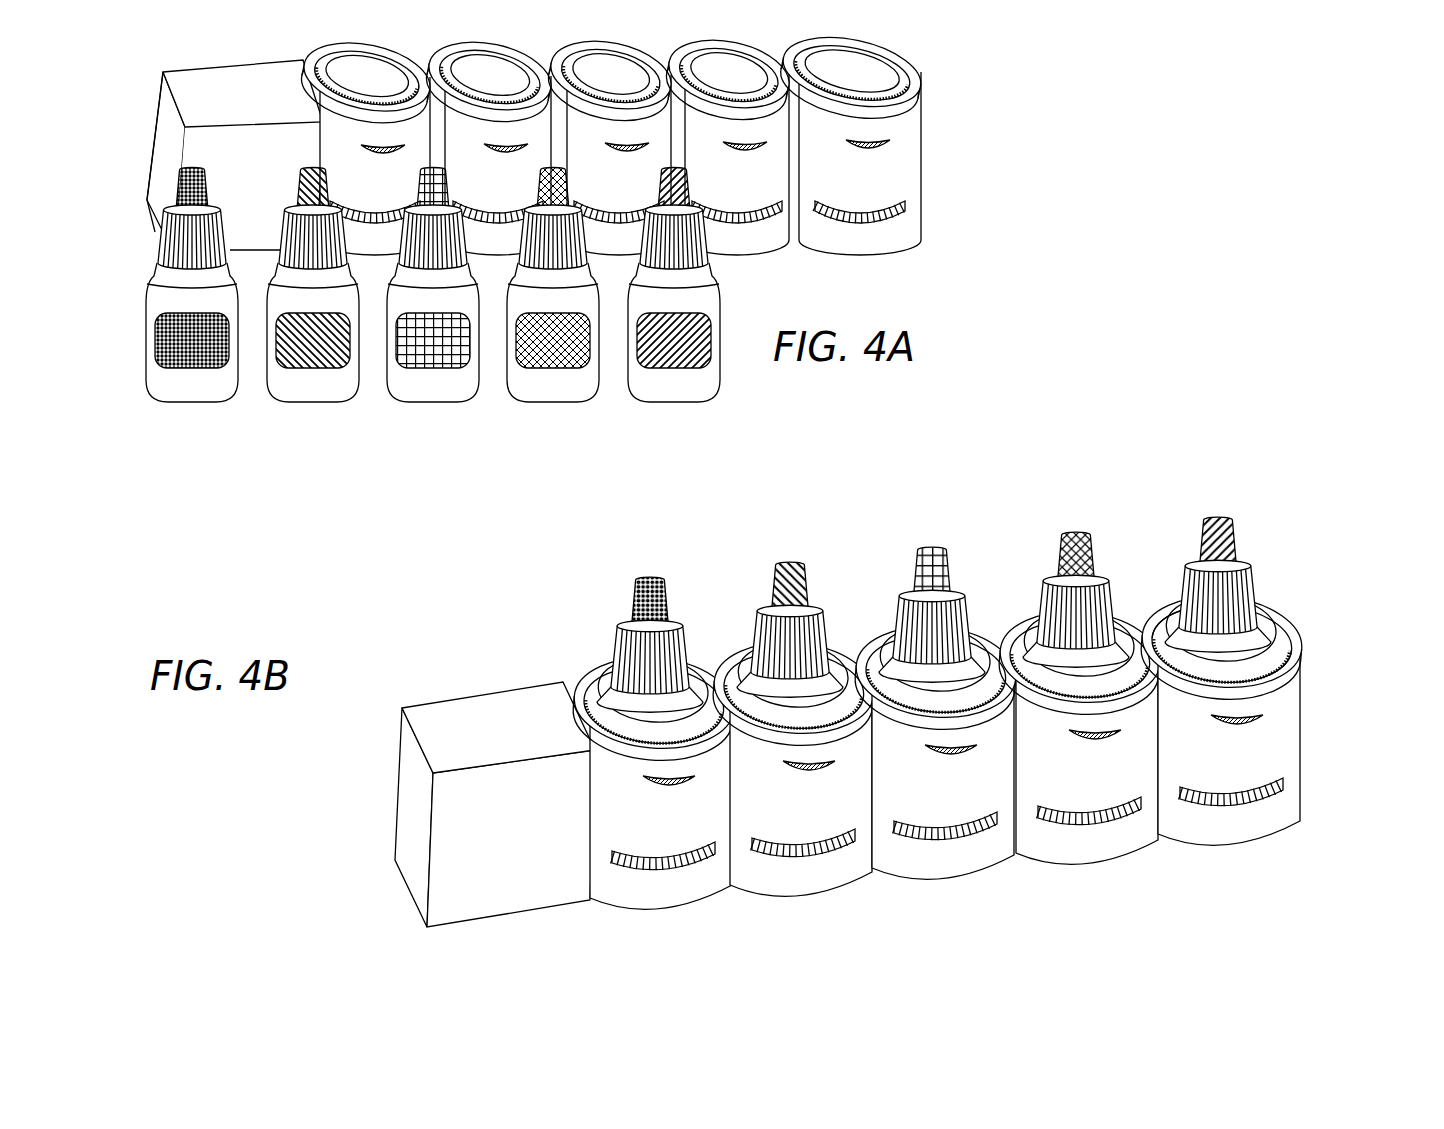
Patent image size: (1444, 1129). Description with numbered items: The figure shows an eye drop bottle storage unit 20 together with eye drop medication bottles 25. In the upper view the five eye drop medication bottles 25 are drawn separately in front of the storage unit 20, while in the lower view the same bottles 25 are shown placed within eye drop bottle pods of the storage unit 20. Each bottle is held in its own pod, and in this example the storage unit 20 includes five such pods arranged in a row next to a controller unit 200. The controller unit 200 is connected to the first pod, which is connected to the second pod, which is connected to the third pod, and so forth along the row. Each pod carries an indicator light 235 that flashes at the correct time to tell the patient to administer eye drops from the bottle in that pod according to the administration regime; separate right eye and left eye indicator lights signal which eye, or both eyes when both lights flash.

In FIG. 4A, the eye drop bottle storage unit 20 is at (950, 113).
In FIG. 4B, the eye drop bottle storage unit 20 is at (1288, 448).
In FIG. 4A, the eye drop medication bottle 25 is at (190, 402).
In FIG. 4B, the eye drop medication bottle 25 is at (650, 578).
In FIG. 4B, the controller unit 200 is at (473, 696).
In FIG. 4B, the indicator light 235 is at (641, 870).